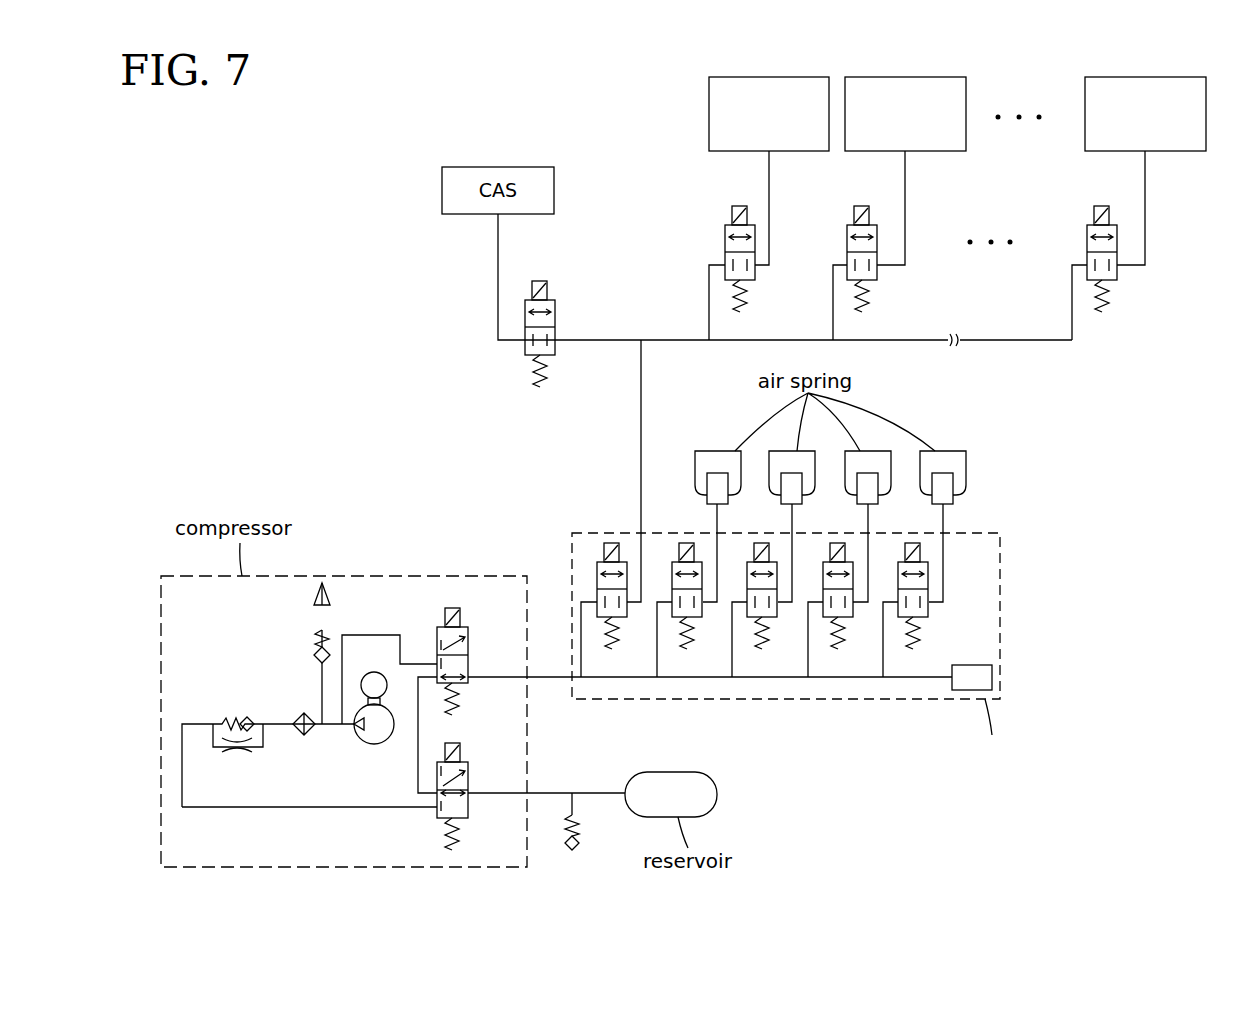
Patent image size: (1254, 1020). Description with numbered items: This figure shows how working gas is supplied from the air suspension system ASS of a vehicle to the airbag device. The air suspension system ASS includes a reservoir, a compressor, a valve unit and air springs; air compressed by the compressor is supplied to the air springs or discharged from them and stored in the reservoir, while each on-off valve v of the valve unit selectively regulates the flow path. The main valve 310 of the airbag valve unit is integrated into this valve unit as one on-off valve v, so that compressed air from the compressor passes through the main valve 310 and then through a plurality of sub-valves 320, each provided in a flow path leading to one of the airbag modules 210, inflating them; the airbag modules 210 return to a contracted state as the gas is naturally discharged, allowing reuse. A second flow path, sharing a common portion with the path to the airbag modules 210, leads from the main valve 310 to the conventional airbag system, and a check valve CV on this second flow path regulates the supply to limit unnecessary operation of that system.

The airbag module 210 is at (1191, 176).
The sub-valve 320 is at (1140, 292).
The main valve 310 is at (627, 615).
The check valve CV is at (556, 352).
The air suspension system ASS is at (1038, 533).
The on-off valve v is at (917, 715).